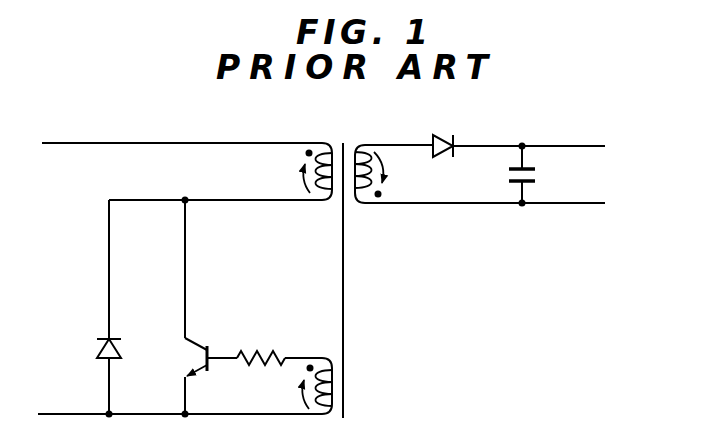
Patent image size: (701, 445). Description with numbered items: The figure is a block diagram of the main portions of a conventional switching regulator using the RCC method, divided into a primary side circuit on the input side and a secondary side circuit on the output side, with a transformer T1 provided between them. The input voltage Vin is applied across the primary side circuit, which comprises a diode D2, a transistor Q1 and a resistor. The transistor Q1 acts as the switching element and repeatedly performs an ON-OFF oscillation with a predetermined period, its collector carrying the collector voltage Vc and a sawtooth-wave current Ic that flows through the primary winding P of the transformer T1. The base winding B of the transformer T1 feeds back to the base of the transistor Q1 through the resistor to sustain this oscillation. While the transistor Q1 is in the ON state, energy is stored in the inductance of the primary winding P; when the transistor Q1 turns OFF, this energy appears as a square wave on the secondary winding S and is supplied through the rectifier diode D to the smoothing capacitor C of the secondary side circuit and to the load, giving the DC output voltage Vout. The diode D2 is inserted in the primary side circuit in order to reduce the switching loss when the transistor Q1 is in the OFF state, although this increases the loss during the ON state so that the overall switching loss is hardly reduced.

The input voltage Vin is at (59, 155).
The collector voltage Vc is at (158, 180).
The current of a sawtooth wave Ic is at (298, 222).
The diode D2 is at (94, 309).
The transistor Q1 is at (199, 309).
The transformer T1 is at (344, 256).
The primary winding P is at (298, 172).
The secondary winding S is at (389, 175).
The base winding B is at (298, 387).
The rectifier diode D is at (443, 130).
The smoothing capacitor C is at (512, 175).
The output voltage Vout is at (592, 158).